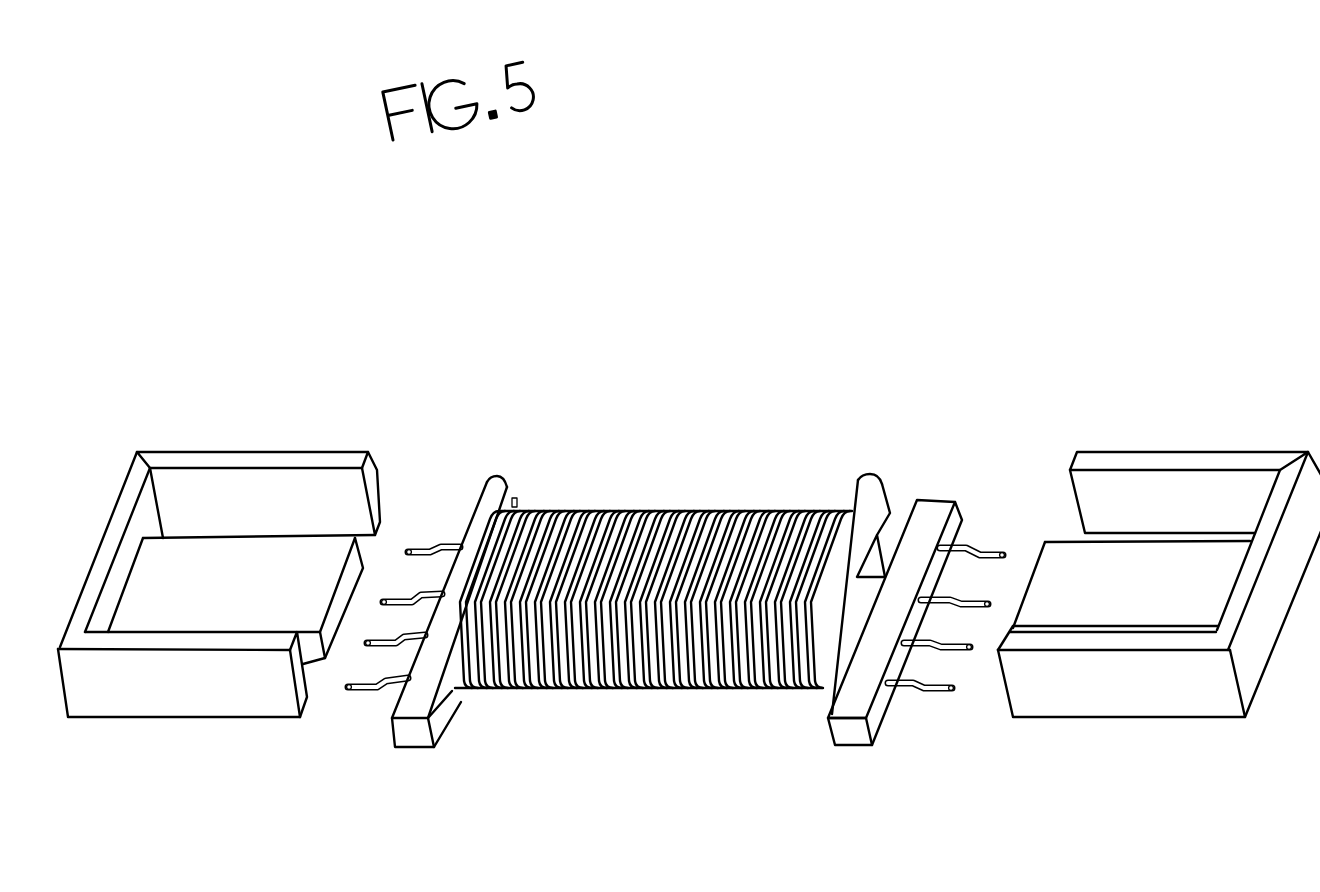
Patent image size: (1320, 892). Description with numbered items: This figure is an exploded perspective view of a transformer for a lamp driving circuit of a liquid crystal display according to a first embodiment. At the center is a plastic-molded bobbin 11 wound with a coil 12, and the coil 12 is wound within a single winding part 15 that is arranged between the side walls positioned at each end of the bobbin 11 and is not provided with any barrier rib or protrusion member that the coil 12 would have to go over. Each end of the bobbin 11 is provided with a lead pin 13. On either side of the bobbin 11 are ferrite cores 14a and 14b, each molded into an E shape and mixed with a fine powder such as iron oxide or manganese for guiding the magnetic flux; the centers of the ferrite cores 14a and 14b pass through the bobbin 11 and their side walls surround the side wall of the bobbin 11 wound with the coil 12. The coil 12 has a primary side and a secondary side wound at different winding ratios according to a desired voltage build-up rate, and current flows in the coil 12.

The bobbin 11 is at (860, 737).
The coil 12 is at (546, 511).
The lead pin 13 is at (996, 549).
The ferrite core 14a is at (202, 700).
The ferrite core 14b is at (1115, 717).
The single winding part 15 is at (780, 703).